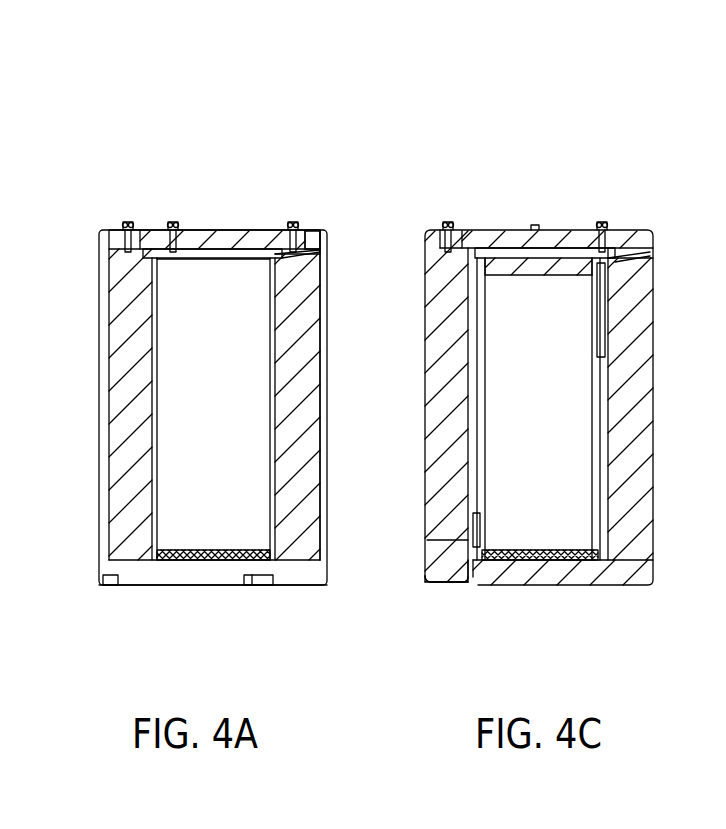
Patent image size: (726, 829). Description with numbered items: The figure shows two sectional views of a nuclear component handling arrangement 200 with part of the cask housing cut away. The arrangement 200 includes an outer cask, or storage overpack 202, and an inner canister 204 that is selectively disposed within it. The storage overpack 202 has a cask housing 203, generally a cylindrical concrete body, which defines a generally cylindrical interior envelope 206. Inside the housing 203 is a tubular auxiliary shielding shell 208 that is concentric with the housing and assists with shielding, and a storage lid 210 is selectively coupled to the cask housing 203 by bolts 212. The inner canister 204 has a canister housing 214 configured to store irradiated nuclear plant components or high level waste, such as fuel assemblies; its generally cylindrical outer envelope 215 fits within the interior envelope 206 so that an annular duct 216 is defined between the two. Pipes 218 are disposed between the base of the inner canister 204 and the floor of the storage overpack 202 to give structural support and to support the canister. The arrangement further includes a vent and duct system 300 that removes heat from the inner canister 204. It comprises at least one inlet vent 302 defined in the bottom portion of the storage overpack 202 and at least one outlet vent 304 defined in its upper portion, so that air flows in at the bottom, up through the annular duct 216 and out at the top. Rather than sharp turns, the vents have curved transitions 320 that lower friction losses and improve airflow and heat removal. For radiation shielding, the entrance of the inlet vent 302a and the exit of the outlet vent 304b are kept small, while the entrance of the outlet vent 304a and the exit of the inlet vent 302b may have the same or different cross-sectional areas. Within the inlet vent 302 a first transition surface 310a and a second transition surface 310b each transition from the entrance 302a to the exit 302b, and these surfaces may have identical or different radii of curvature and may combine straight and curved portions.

In FIG. 4A, the nuclear component handling arrangement 200 is at (252, 158).
In FIG. 4A, the outer cask 202 is at (98, 226).
In FIG. 4C, the outer cask 202 is at (478, 202).
In FIG. 4A, the cask housing 203 is at (99, 275).
In FIG. 4C, the cask housing 203 is at (426, 345).
In FIG. 4A, the inner canister 204 is at (280, 334).
In FIG. 4C, the inner canister 204 is at (608, 364).
In FIG. 4A, the interior envelope 206 is at (148, 333).
In FIG. 4C, the interior envelope 206 is at (470, 490).
In FIG. 4A, the auxiliary shielding shell 208 is at (153, 376).
In FIG. 4C, the auxiliary shielding shell 208 is at (468, 345).
In FIG. 4A, the storage lid 210 is at (200, 230).
In FIG. 4C, the storage lid 210 is at (520, 230).
In FIG. 4A, the bolts 212 is at (173, 222).
In FIG. 4C, the bolts 212 is at (450, 226).
In FIG. 4A, the canister housing 214 is at (170, 420).
In FIG. 4C, the canister housing 214 is at (480, 418).
In FIG. 4A, the outer envelope 215 is at (240, 420).
In FIG. 4C, the outer envelope 215 is at (565, 452).
In FIG. 4A, the annular duct 216 is at (137, 473).
In FIG. 4C, the annular duct 216 is at (458, 450).
In FIG. 4A, the pipes 218 is at (220, 573).
In FIG. 4A, the vent and duct system 300 is at (338, 211).
In FIG. 4C, the vent and duct system 300 is at (538, 164).
In FIG. 4A, the inlet vent 302 is at (105, 596).
In FIG. 4C, the inlet vent 302 is at (418, 598).
In FIG. 4A, the entrance of inlet vent 302a is at (102, 585).
In FIG. 4C, the entrance of inlet vent 302a is at (425, 582).
In FIG. 4C, the exit of inlet vent 302b is at (484, 562).
In FIG. 4A, the outlet vent 304 is at (340, 236).
In FIG. 4C, the outlet vent 304 is at (677, 230).
In FIG. 4A, the entrance of outlet vent 304a is at (290, 258).
In FIG. 4C, the entrance of outlet vent 304a is at (582, 230).
In FIG. 4A, the exit of outlet vent 304b is at (328, 253).
In FIG. 4C, the exit of outlet vent 304b is at (647, 253).
In FIG. 4C, the first transition surface 310a is at (432, 560).
In FIG. 4C, the second transition surface 310b is at (462, 586).
In FIG. 4A, the curved transitions 320 is at (298, 255).
In FIG. 4C, the curved transitions 320 is at (613, 252).